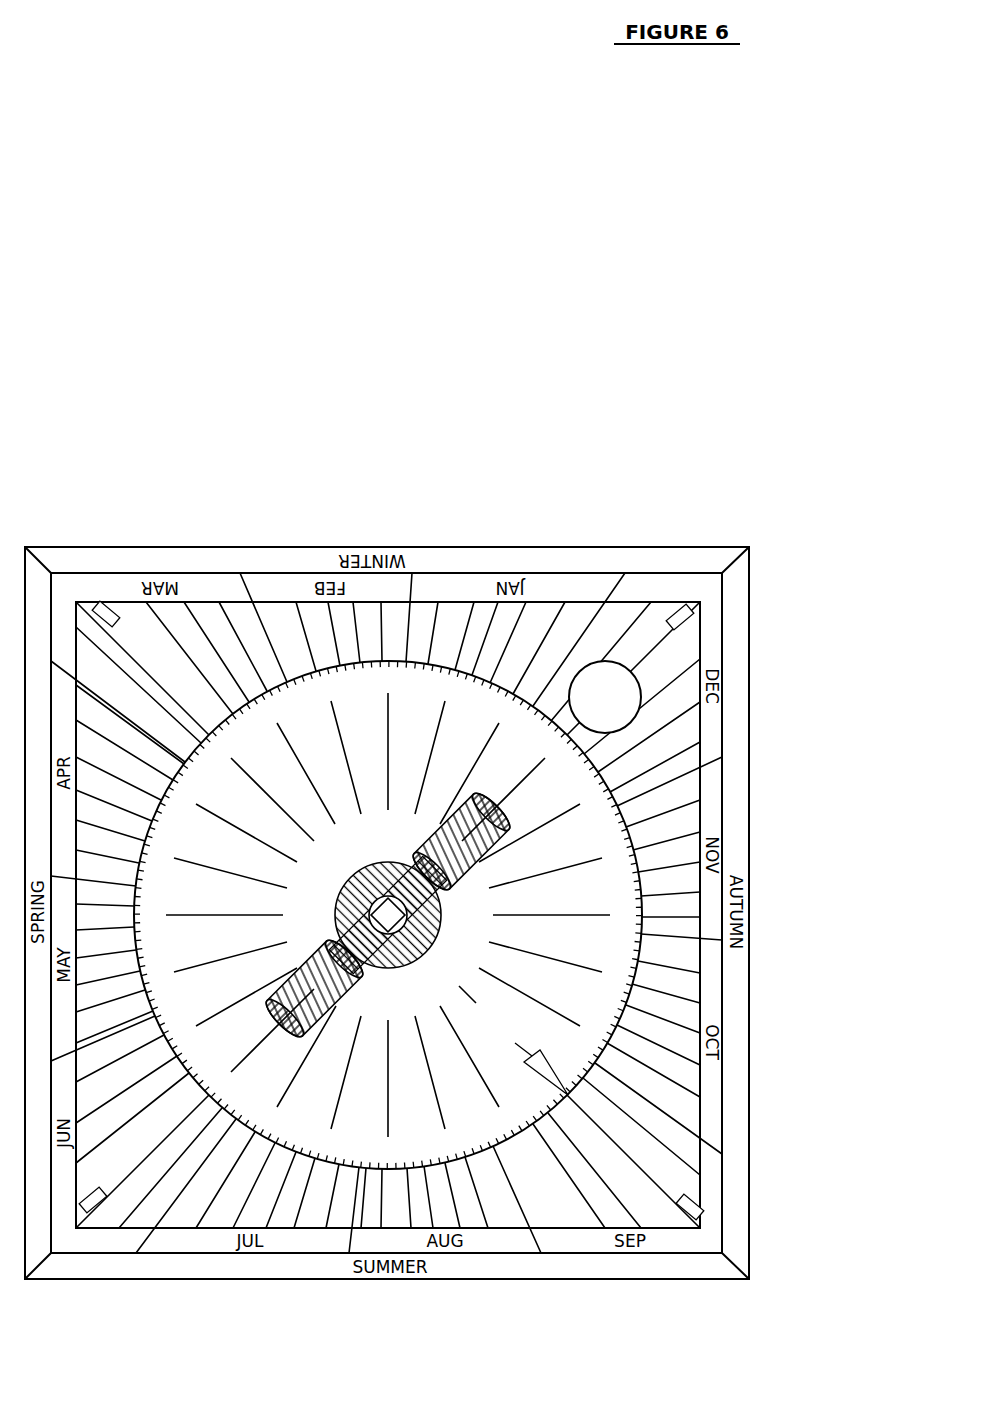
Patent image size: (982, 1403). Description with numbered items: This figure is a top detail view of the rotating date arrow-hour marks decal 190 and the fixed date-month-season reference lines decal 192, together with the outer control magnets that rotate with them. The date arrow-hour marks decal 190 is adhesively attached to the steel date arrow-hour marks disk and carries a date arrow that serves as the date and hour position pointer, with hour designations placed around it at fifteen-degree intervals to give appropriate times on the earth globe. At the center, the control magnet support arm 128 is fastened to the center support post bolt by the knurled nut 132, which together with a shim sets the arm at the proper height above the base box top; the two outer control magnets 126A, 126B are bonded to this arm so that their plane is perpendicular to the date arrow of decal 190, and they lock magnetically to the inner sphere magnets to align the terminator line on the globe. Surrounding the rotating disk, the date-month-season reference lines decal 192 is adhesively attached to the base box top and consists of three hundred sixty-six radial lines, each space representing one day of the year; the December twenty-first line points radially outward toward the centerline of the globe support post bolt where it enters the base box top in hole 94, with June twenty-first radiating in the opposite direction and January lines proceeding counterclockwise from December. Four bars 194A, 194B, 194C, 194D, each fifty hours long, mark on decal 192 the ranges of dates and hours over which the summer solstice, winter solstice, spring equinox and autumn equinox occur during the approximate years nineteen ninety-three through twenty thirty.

The hole 94 is at (592, 662).
The outer control magnet 126A is at (320, 973).
The outer control magnet 126B is at (462, 793).
The control magnet support arm 128 is at (310, 1100).
The knurled nut 132 is at (402, 837).
The date arrow-hour marks decal 190 is at (356, 1105).
The date-month-season reference lines decal 192 is at (580, 1208).
The bar 194A is at (100, 604).
The bar 194B is at (88, 1210).
The bar 194C is at (690, 1225).
The bar 194D is at (683, 608).